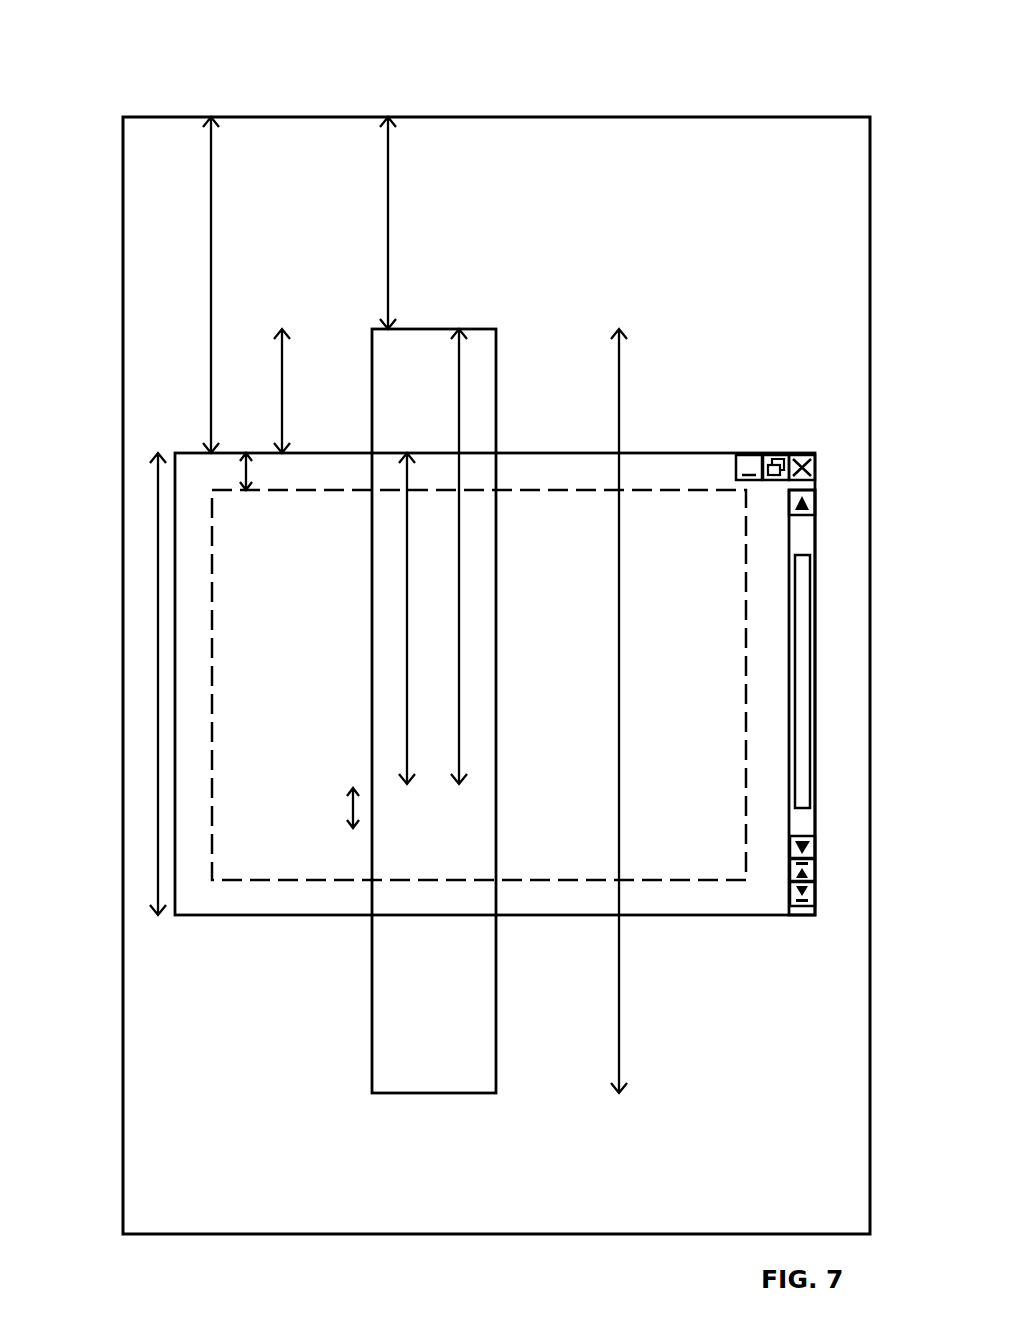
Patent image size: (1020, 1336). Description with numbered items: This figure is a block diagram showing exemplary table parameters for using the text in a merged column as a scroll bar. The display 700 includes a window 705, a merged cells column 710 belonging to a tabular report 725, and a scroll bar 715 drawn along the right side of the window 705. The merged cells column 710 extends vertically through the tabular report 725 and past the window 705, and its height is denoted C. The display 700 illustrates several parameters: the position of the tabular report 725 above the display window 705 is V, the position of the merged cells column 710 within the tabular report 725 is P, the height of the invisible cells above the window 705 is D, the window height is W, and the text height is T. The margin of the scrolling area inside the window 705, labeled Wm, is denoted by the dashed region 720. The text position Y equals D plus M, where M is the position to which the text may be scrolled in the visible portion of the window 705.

The display 700 is at (182, 86).
The window 705 is at (708, 453).
The merged cells column 710 is at (497, 613).
The scroll bar 715 is at (812, 572).
The margin of the scrolling area 720 is at (745, 613).
The tabular report 725 is at (708, 117).